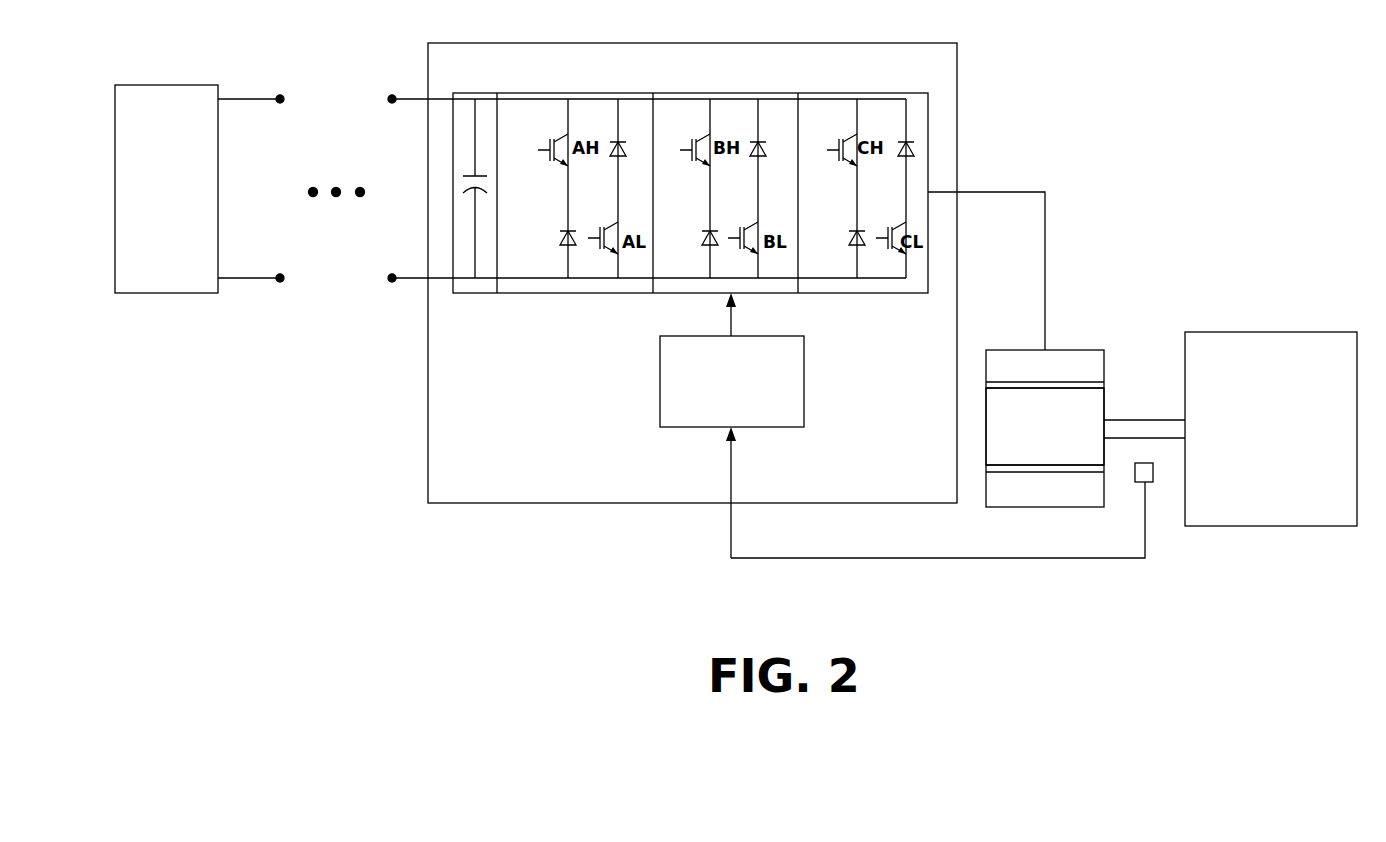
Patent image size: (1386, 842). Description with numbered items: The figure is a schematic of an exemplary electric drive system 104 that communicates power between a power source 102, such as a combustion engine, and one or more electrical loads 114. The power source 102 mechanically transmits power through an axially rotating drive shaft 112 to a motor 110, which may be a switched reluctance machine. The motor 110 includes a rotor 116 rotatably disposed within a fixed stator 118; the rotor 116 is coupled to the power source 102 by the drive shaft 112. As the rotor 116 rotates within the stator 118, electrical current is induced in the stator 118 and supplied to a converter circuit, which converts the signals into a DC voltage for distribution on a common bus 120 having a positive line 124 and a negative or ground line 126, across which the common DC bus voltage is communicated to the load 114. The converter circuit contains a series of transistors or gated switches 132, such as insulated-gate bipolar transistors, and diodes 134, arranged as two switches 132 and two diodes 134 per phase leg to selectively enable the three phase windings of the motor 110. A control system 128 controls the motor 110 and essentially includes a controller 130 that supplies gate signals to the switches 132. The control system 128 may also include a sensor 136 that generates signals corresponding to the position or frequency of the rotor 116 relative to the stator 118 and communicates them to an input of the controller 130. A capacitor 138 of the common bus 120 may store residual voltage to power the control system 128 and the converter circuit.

The power source 102 is at (1260, 358).
The electric drive system 104 is at (350, 571).
The motor 110 is at (1086, 312).
The drive shaft 112 is at (1143, 427).
The electrical load 114 is at (143, 277).
The rotor 116 is at (1005, 422).
The stator 118 is at (1005, 373).
The common bus 120 is at (392, 98).
The positive line 124 is at (413, 98).
The negative line 126 is at (413, 277).
The control system 128 is at (434, 505).
The controller 130 is at (660, 395).
The switch 132 is at (549, 151).
The diode 134 is at (616, 146).
The sensor 136 is at (1148, 474).
The capacitor 138 is at (462, 176).